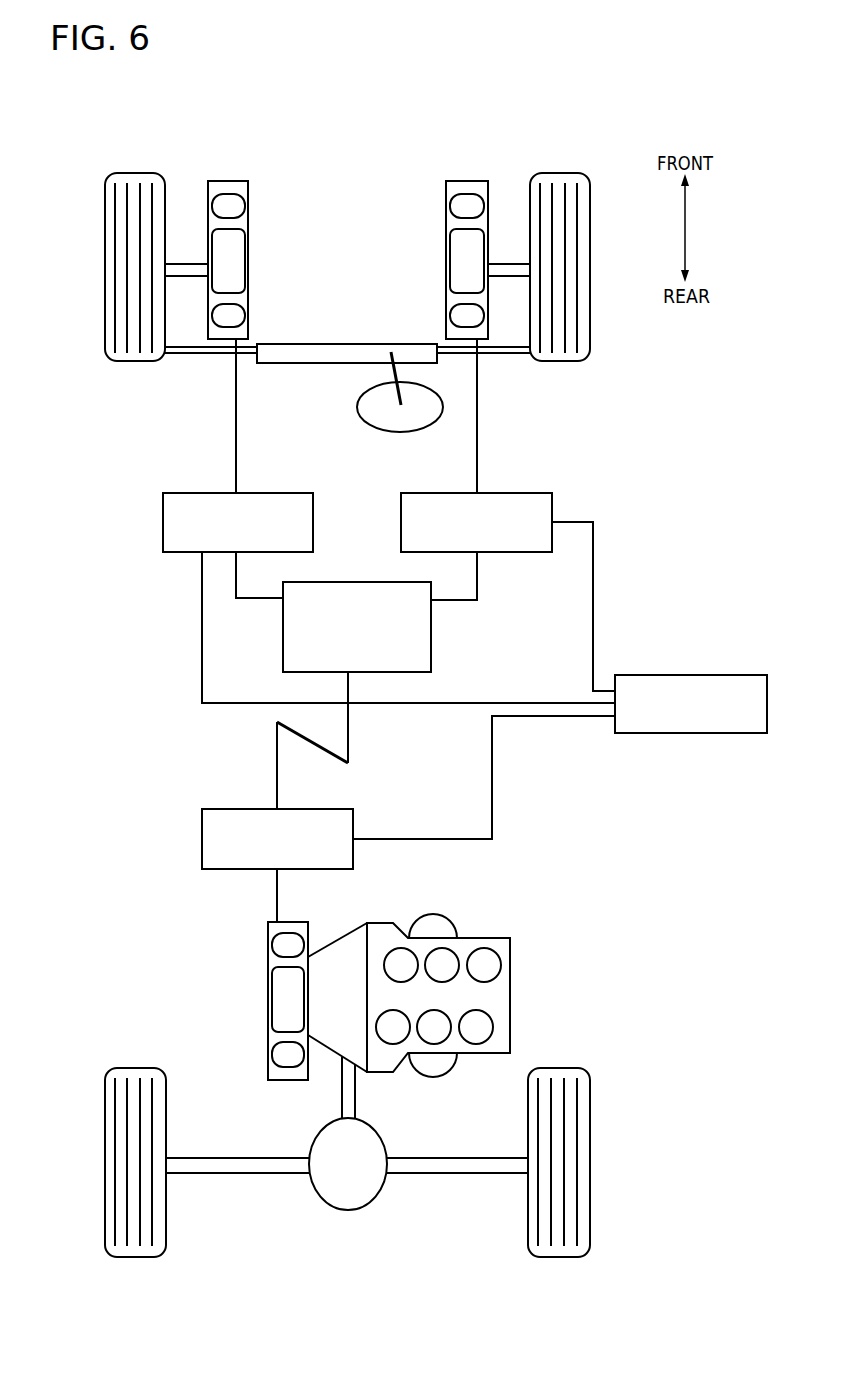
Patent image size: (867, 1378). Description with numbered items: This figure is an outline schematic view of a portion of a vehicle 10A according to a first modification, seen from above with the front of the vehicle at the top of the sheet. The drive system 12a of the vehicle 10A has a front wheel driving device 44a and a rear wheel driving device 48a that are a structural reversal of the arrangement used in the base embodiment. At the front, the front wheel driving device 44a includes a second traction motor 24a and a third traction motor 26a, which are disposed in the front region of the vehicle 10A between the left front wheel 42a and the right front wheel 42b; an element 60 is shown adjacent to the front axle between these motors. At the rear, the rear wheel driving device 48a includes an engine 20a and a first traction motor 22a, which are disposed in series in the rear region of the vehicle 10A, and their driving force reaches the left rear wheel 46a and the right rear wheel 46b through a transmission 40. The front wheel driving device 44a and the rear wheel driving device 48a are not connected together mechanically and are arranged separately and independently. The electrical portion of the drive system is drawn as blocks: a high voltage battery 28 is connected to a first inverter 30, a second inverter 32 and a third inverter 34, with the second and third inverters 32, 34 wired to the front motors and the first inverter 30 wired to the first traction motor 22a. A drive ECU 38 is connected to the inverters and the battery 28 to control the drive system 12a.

The vehicle 10A is at (117, 103).
The drive system 12a is at (347, 223).
The left front wheel 42a is at (133, 173).
The right front wheel 42b is at (555, 173).
The front wheel driving device 44a is at (348, 218).
The second traction motor 24a is at (249, 192).
The third traction motor 26a is at (446, 192).
The sensor 60 is at (357, 409).
The second inverter 32 is at (198, 493).
The third inverter 34 is at (517, 493).
The high voltage battery 28 is at (432, 637).
The drive electronic control unit 38 is at (690, 675).
The first inverter 30 is at (220, 809).
The rear wheel driving device 48a is at (389, 963).
The first traction motor 22a is at (306, 922).
The engine 20a is at (489, 936).
The transmission 40 is at (339, 1040).
The left rear wheel 46a is at (112, 1066).
The right rear wheel 46b is at (558, 1066).